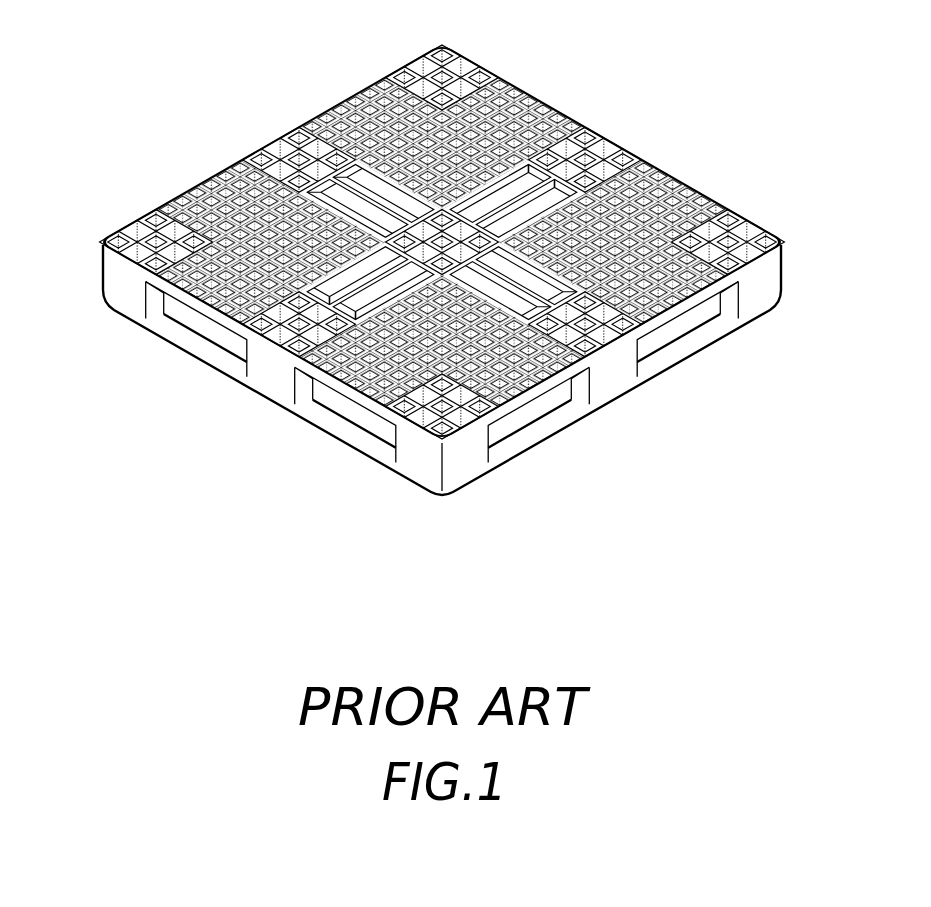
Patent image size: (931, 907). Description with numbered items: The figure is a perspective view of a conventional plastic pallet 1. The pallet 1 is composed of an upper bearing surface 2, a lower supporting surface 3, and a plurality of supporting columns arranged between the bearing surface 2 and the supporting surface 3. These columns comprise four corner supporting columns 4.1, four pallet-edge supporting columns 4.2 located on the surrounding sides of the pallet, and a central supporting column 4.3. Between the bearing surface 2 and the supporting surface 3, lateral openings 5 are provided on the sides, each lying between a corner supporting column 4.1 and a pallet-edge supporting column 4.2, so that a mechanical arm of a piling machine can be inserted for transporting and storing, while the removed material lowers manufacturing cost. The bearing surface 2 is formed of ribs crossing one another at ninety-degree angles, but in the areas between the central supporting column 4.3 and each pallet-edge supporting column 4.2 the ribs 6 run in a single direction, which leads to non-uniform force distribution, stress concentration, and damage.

The pallet 1 is at (316, 40).
The bearing surface 2 is at (675, 172).
The supporting surface 3 is at (165, 338).
The corner supporting column 4.1 is at (418, 60).
The pallet-edge supporting column 4.2 is at (263, 140).
The central supporting column 4.3 is at (527, 85).
The lateral opening 5 is at (205, 328).
The ribs arranged in a single direction 6 is at (303, 122).